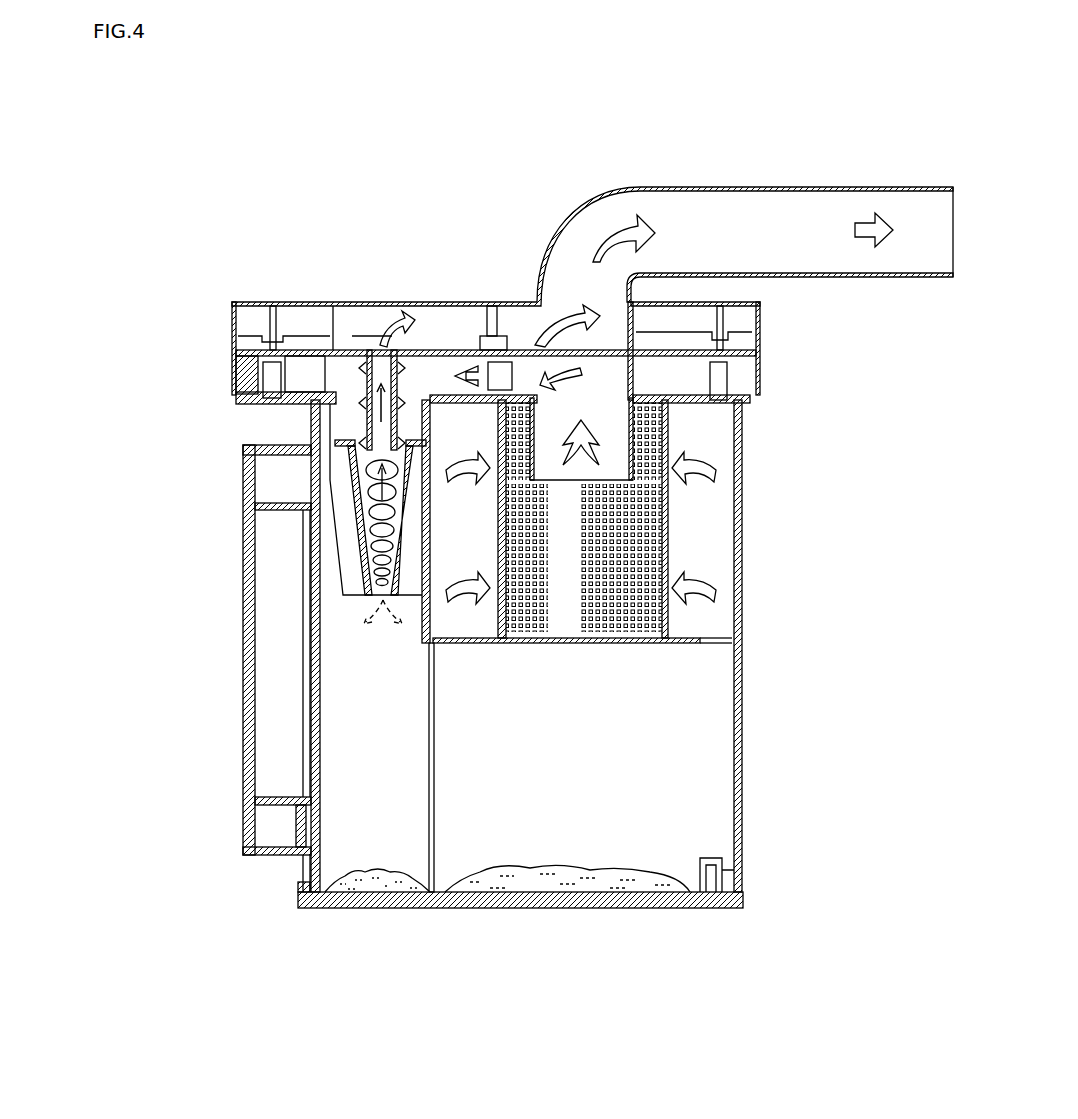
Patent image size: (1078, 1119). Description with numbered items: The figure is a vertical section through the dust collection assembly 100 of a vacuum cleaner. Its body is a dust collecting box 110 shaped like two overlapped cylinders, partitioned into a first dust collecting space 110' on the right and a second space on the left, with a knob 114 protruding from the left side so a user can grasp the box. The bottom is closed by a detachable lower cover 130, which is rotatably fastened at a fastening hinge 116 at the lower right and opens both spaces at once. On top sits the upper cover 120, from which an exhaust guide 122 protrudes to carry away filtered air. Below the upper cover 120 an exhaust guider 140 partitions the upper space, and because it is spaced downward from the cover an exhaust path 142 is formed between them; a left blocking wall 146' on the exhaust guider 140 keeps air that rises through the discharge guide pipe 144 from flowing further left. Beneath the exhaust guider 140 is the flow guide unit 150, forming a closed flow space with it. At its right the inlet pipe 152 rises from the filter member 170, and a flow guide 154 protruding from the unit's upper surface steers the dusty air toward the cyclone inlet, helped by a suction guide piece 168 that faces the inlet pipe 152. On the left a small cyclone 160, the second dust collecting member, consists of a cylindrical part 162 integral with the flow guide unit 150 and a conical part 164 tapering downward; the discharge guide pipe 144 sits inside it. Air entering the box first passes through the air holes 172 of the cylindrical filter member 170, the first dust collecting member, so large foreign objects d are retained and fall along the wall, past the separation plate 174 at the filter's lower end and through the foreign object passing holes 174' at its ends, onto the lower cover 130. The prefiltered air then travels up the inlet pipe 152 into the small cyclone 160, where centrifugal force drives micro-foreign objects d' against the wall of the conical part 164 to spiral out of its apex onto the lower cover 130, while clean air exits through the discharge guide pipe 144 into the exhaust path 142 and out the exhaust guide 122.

The dust collection assembly 100 is at (172, 627).
The dust collecting box 110 is at (548, 624).
The first dust collecting space 110' is at (570, 768).
The knob 114 is at (245, 686).
The fastening hinge 116 is at (730, 877).
The upper cover 120 is at (340, 302).
The exhaust guide 122 is at (775, 187).
The lower cover 130 is at (498, 907).
The exhaust guider 140 is at (234, 352).
The exhaust path 142 is at (533, 333).
The discharge guide pipe 144 is at (372, 432).
The left blocking wall 146' is at (266, 309).
The flow guide unit 150 is at (302, 395).
The inlet pipe 152 is at (617, 452).
The flow guide 154 is at (637, 380).
The small cyclone 160 is at (120, 516).
The cylindrical part 162 is at (360, 442).
The conical part 164 is at (360, 535).
The suction guide piece 168 is at (432, 352).
The filter member 170 is at (670, 558).
The air holes 172 is at (647, 512).
The separation plate 174 is at (639, 659).
The foreign object passing hole 174' is at (775, 628).
The large foreign objects d is at (567, 931).
The micro-foreign objects d' is at (377, 933).